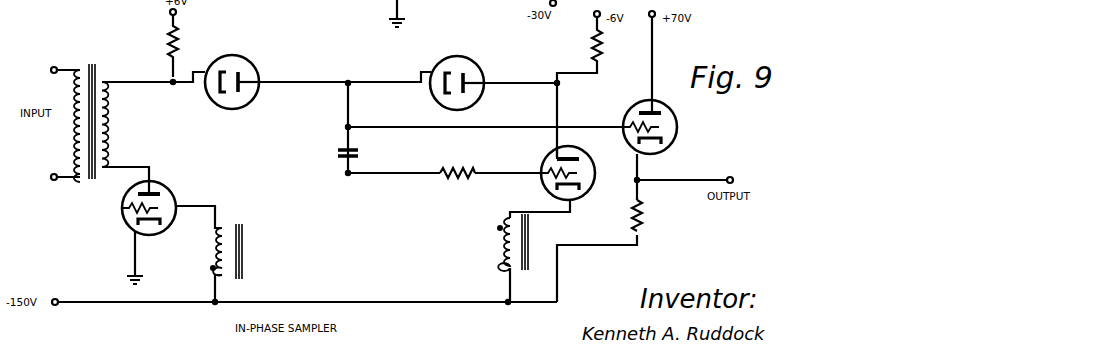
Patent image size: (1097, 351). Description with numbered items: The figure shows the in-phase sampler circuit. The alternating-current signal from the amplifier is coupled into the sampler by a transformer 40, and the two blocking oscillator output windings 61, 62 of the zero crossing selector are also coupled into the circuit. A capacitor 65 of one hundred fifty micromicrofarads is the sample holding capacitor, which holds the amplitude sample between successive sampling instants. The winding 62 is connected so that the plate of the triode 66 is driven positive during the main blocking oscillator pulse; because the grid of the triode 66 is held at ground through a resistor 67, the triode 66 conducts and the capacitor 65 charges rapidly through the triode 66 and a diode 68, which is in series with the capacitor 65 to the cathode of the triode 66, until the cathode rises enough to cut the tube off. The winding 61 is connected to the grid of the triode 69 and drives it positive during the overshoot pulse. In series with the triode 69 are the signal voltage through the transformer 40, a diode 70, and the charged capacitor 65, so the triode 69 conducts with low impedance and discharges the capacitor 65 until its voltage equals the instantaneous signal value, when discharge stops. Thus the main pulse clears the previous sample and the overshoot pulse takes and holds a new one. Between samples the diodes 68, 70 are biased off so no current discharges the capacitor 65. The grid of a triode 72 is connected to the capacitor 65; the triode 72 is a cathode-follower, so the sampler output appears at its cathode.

The transformer 40 is at (96, 72).
The blocking oscillator output winding 61 is at (247, 245).
The blocking oscillator output winding 62 is at (502, 251).
The sample holding capacitor 65 is at (328, 158).
The triode 66 is at (587, 200).
The resistor 67 is at (466, 171).
The diode 68 is at (475, 62).
The triode 69 is at (172, 199).
The diode 70 is at (255, 63).
The triode 72 is at (679, 131).